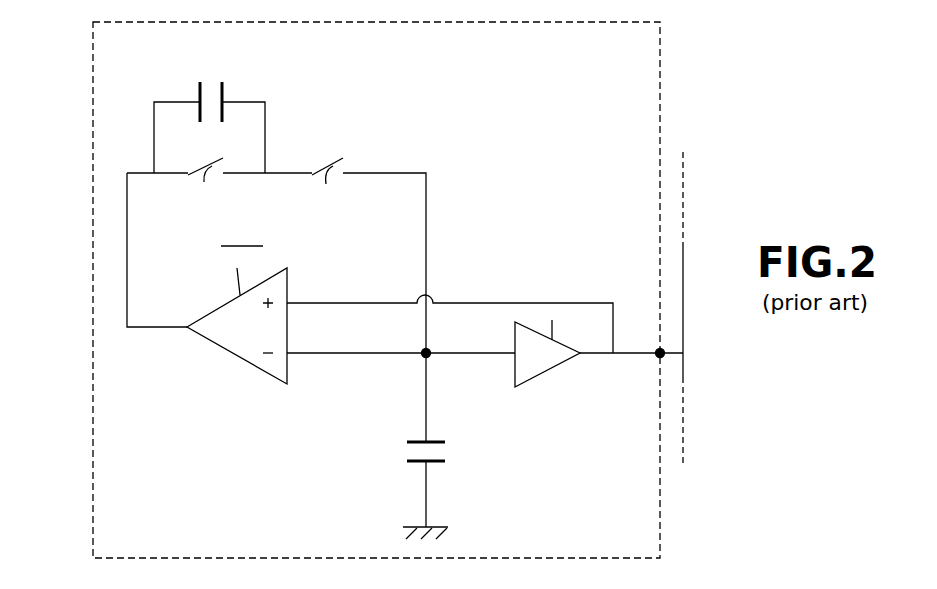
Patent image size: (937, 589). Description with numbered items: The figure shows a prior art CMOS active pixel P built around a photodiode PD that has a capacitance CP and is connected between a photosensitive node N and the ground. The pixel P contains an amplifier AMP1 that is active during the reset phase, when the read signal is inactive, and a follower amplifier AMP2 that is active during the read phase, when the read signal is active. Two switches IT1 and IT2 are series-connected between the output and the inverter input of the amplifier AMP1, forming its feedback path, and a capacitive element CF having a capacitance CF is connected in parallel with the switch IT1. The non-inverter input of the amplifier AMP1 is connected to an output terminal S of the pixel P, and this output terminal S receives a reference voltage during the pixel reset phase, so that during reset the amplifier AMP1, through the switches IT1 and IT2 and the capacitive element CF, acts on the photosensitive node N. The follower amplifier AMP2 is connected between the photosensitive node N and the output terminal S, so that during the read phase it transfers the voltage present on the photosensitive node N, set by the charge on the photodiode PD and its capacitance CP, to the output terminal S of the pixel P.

The CMOS active pixel P is at (92, 393).
The capacitive element CF is at (212, 81).
The switch IT1 is at (205, 184).
The switch IT2 is at (328, 184).
The amplifier AMP1 is at (233, 339).
The follower amplifier AMP2 is at (533, 368).
The photosensitive node N is at (421, 357).
The output terminal S is at (658, 358).
The capacitance of the photodiode CP is at (448, 454).
The photodiode PD is at (420, 462).